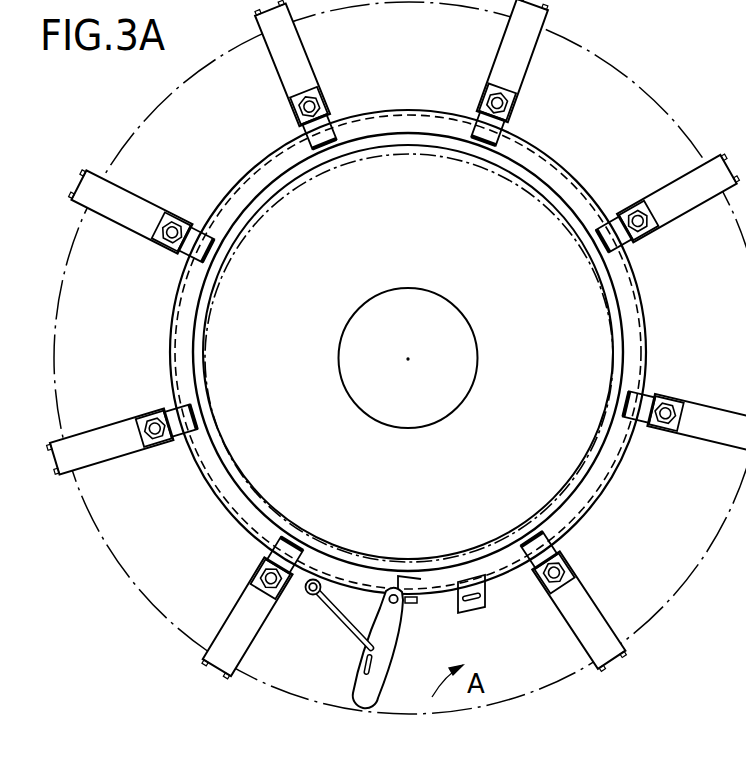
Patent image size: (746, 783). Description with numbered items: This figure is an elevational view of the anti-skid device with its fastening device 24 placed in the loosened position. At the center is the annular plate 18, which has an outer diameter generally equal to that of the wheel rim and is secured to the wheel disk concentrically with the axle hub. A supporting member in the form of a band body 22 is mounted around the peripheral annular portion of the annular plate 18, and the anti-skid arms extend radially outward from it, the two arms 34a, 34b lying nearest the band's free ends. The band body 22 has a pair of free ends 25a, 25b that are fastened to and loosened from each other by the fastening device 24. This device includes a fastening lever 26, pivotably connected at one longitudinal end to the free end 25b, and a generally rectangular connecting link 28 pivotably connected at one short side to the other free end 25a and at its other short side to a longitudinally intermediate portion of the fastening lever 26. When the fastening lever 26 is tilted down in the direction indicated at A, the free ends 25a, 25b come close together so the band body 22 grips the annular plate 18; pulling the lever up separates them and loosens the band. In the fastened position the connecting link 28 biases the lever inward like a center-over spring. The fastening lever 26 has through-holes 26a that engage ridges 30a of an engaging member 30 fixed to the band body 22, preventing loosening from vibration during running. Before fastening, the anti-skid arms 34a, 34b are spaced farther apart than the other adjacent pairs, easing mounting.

The annular plate 18 is at (585, 326).
The band body 22 is at (190, 373).
The fastening device 24 is at (300, 677).
The free end of band body 25a is at (315, 579).
The free end of band body 25b is at (412, 586).
The fastening lever 26 is at (392, 624).
The through-hole 26a is at (366, 665).
The connecting link 28 is at (341, 612).
The engaging member 30 is at (486, 593).
The ridge 30a is at (470, 592).
The anti-skid arm 34a is at (219, 657).
The anti-skid arm 34b is at (607, 647).